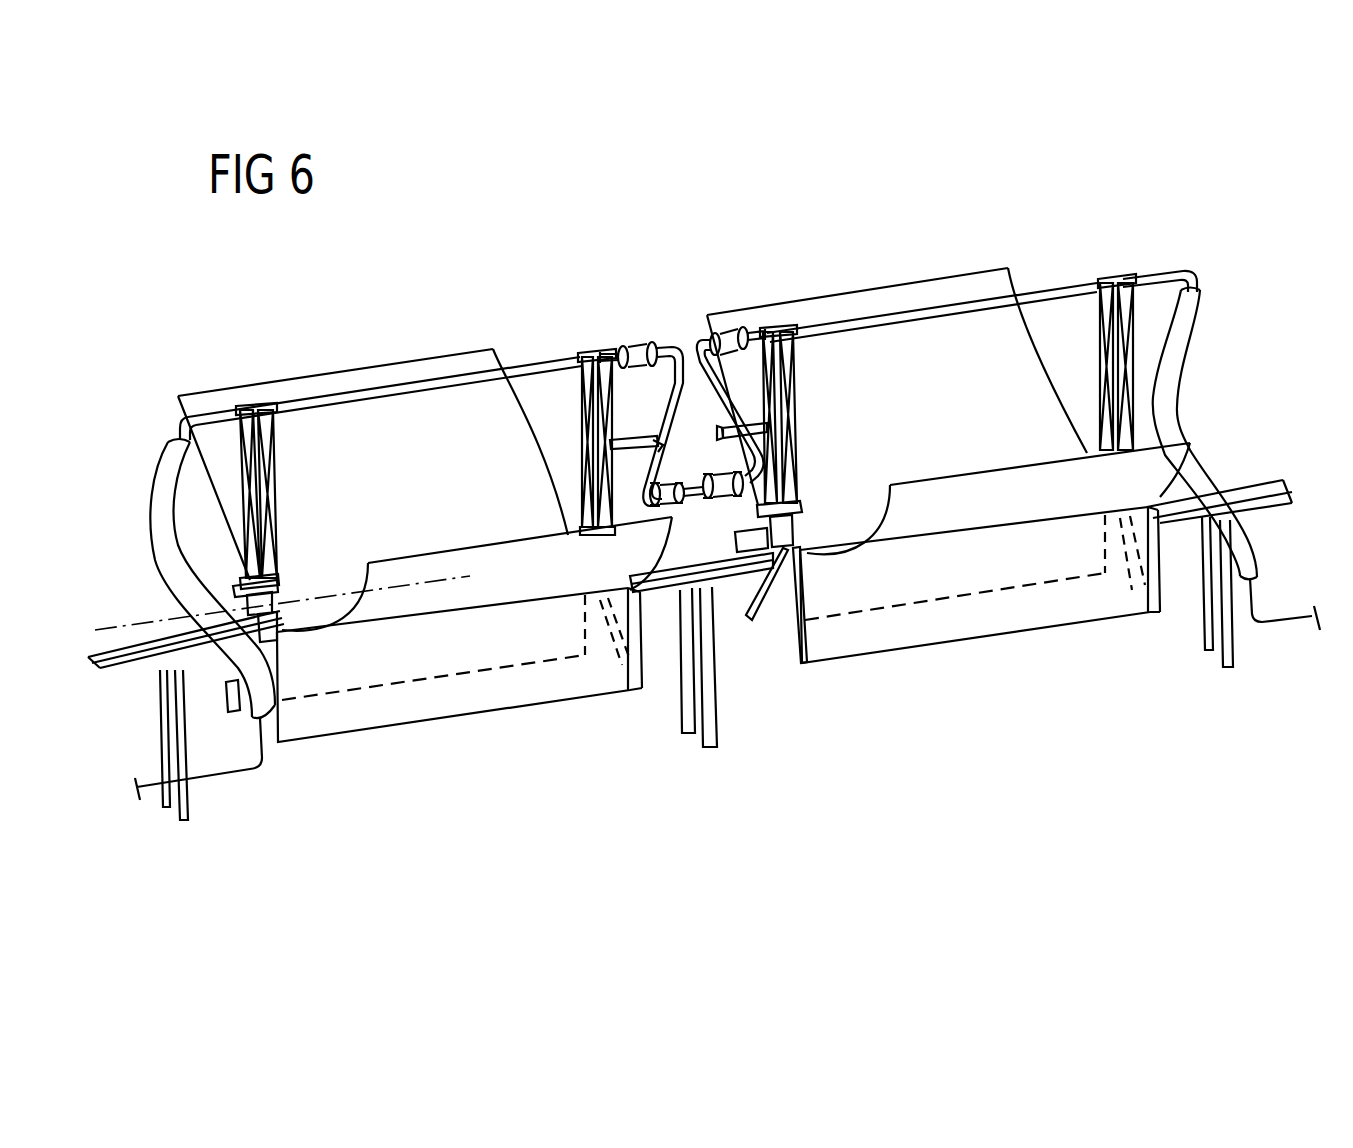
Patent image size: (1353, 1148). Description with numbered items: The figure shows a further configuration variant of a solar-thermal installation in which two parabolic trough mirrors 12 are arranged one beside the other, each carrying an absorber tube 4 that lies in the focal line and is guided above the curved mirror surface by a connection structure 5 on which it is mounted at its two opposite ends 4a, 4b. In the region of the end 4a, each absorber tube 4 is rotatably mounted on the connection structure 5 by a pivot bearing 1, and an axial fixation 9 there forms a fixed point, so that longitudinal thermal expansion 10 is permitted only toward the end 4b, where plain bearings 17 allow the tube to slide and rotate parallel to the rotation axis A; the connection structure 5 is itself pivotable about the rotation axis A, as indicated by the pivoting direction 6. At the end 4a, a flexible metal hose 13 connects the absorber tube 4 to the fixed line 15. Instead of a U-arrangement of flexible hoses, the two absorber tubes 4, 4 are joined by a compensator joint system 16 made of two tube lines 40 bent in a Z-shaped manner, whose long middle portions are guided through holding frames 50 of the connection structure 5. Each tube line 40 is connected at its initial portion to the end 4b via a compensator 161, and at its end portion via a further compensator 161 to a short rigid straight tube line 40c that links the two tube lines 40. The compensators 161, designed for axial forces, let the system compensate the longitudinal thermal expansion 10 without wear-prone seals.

The pivot bearing 1 is at (802, 507).
The absorber tube 4 is at (412, 392).
The end of the absorber tube 4a is at (178, 394).
The end of the absorber tube 4b is at (614, 353).
The connection structure 5 is at (279, 506).
The pivot direction 6 is at (217, 454).
The axial fixation 9 is at (265, 406).
The longitudinal thermal expansion 10 is at (556, 275).
The parabolic trough mirror 12 is at (432, 513).
The flexible metal hose 13 is at (157, 548).
The fixed line 15 is at (215, 778).
The compensator joint system 16 is at (697, 499).
The plain bearing 17 is at (580, 373).
The tube line 40 is at (702, 343).
The rigid tube line 40c is at (690, 486).
The holding frame 50 is at (628, 436).
The compensator 161 is at (632, 346).
The rotation axis A is at (140, 622).